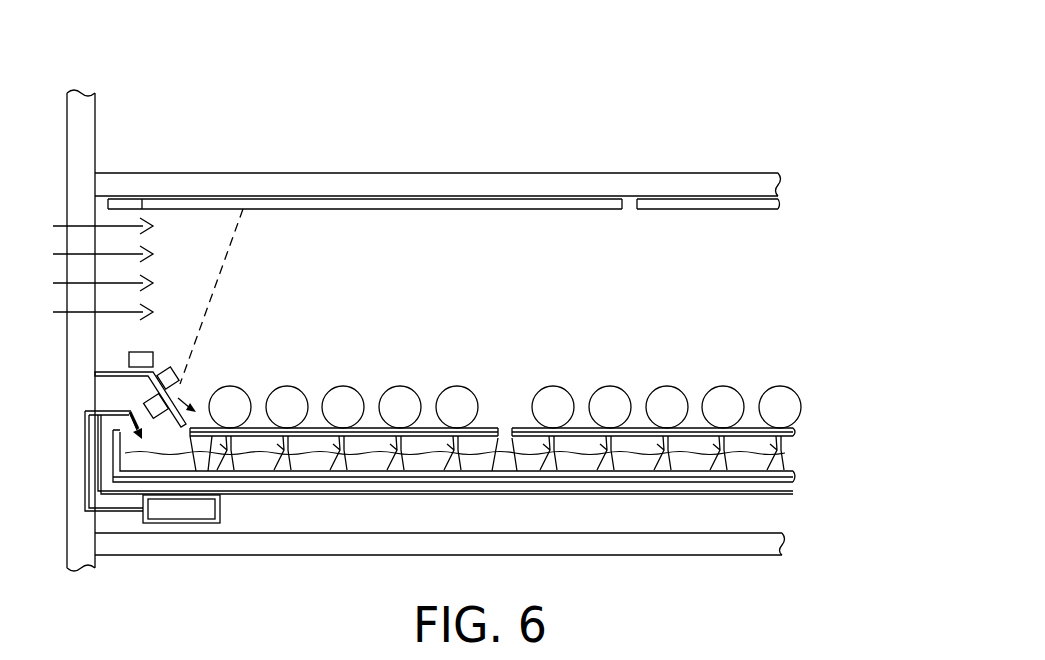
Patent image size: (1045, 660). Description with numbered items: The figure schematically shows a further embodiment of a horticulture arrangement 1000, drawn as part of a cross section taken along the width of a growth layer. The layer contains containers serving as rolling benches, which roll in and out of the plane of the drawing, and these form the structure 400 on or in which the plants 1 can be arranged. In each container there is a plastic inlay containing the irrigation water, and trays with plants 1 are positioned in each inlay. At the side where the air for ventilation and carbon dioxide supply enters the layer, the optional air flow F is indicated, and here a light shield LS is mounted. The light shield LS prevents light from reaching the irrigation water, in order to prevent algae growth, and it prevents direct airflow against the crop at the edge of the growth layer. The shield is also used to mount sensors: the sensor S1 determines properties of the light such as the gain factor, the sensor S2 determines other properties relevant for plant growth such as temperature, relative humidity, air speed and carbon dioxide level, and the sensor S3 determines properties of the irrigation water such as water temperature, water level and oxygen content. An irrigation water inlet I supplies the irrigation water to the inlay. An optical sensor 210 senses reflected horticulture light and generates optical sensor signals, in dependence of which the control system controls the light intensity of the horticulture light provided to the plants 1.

The horticulture arrangement 1000 is at (750, 124).
The plant 1 is at (680, 372).
The structure 400 is at (521, 401).
The optical sensor 210 is at (226, 356).
The air flow F is at (115, 256).
The light shield LS is at (103, 377).
The sensor S1 is at (171, 365).
The sensor S2 is at (142, 347).
The sensor S3 is at (142, 399).
The irrigation water inlet I is at (108, 411).